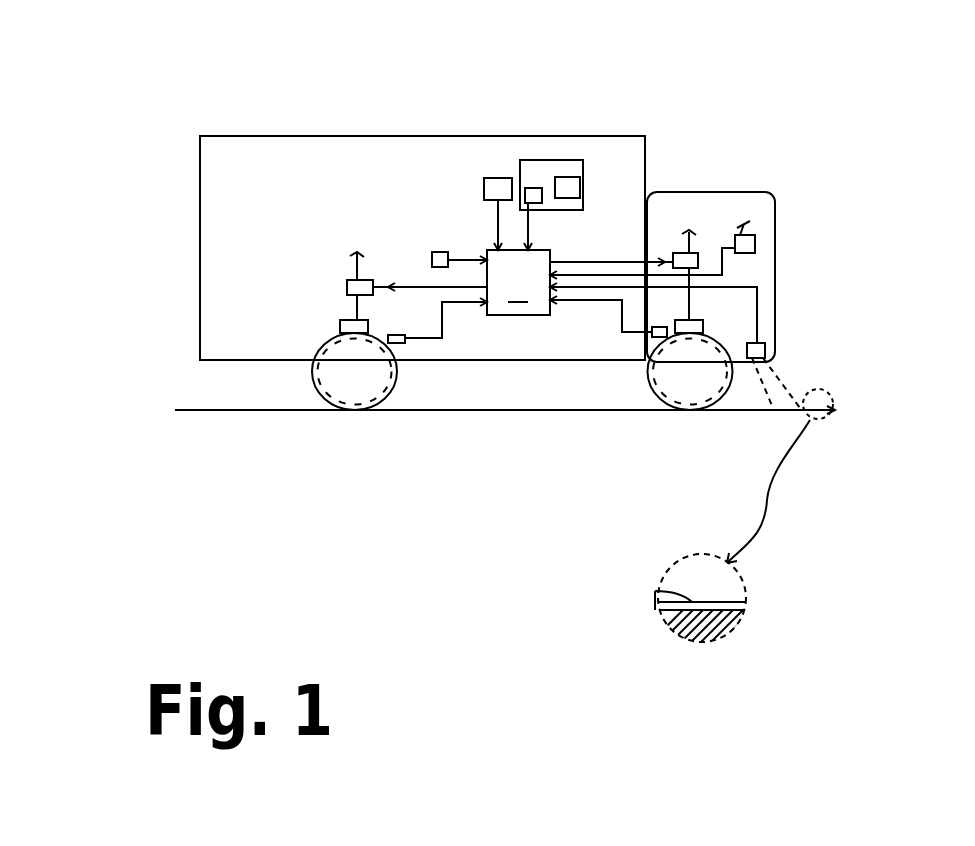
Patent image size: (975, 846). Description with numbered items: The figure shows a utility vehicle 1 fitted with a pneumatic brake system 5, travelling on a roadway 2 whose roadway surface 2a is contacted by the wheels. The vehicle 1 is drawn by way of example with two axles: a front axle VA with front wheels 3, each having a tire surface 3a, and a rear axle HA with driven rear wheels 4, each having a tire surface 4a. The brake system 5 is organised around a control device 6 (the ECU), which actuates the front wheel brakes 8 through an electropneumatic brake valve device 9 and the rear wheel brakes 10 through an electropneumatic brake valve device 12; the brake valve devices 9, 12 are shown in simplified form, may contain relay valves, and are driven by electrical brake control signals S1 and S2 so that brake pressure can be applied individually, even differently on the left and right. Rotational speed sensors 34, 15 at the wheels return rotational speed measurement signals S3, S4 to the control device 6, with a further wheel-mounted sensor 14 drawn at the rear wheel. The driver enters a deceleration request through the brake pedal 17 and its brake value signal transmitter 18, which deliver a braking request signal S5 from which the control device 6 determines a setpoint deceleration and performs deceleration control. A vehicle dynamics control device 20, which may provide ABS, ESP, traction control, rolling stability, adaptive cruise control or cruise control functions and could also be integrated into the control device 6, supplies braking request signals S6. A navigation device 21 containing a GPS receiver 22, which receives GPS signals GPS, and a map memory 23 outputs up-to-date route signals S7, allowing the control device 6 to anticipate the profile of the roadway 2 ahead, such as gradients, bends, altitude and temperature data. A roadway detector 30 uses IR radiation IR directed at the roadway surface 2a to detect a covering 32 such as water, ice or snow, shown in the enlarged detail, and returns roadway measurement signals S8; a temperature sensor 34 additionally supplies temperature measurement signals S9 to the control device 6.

The vehicle 1 is at (215, 210).
The roadway 2 is at (185, 423).
The roadway surface 2a is at (190, 408).
The front wheels 3 is at (677, 393).
The tire surface 3a is at (652, 382).
The rear wheels 4 is at (353, 393).
The tire surface 4a is at (322, 397).
The pneumatic brake system 5 is at (278, 197).
The control device 6 is at (518, 282).
The front wheel brakes 8 is at (702, 322).
The electropneumatic brake valve device 9 is at (698, 256).
The rear wheel brakes 10 is at (340, 322).
The electropneumatic brake valve device 12 is at (348, 283).
The rear wheel sensor 14 is at (407, 347).
The rotational speed sensor 15 is at (650, 338).
The brake pedal 17 is at (745, 223).
The brake value signal transmitter 18 is at (755, 241).
The vehicle dynamics control device 20 is at (484, 182).
The navigation device 21 is at (537, 160).
The GPS receiver 22 is at (581, 187).
The map memory 23 is at (527, 190).
The roadway detector 30 is at (767, 342).
The covering 32 is at (655, 609).
The rotational speed sensor / temperature sensor 34 is at (430, 254).
The GPS signals GPS is at (575, 156).
The rear axle HA is at (398, 444).
The front axle VA is at (691, 446).
The IR radiation IR is at (783, 386).
The brake control signal S1 is at (410, 282).
The brake control signal S2 is at (600, 261).
The rotational speed measurement signal S3 is at (443, 320).
The rotational speed measurement signal S4 is at (575, 301).
The braking request signal S5 is at (756, 262).
The braking request signals S6 is at (484, 200).
The route signals S7 is at (530, 238).
The roadway measurement signals S8 is at (758, 305).
The temperature measurement signals S9 is at (465, 236).